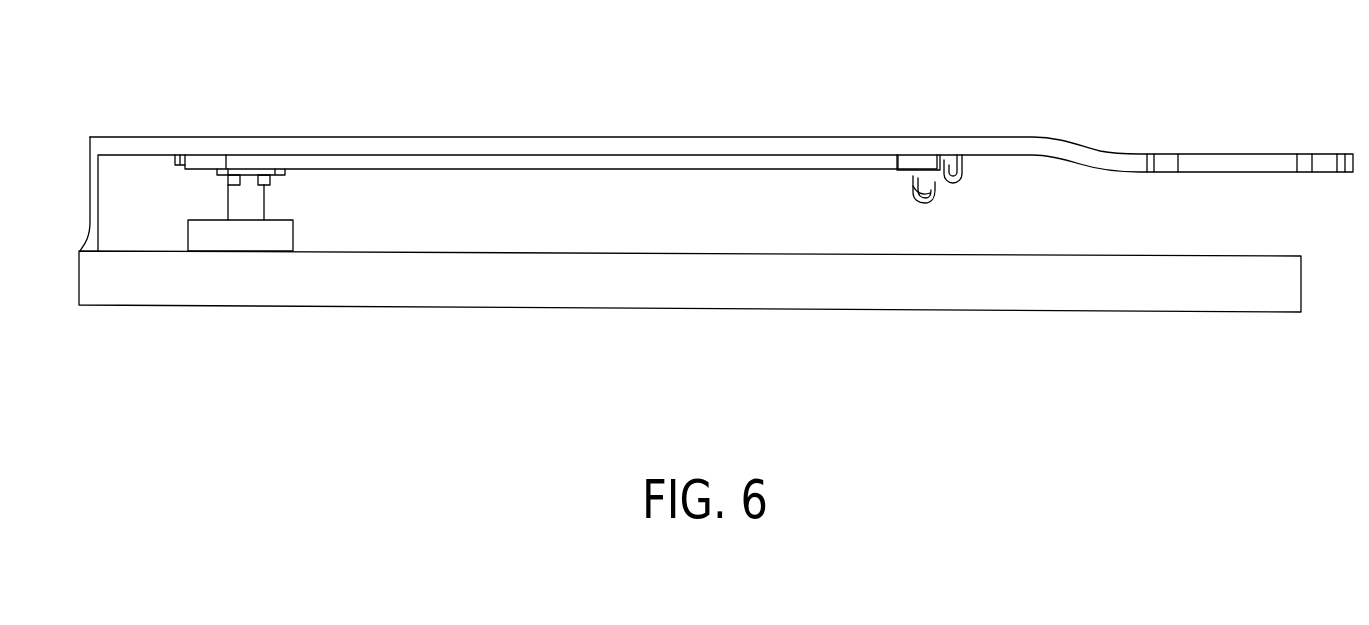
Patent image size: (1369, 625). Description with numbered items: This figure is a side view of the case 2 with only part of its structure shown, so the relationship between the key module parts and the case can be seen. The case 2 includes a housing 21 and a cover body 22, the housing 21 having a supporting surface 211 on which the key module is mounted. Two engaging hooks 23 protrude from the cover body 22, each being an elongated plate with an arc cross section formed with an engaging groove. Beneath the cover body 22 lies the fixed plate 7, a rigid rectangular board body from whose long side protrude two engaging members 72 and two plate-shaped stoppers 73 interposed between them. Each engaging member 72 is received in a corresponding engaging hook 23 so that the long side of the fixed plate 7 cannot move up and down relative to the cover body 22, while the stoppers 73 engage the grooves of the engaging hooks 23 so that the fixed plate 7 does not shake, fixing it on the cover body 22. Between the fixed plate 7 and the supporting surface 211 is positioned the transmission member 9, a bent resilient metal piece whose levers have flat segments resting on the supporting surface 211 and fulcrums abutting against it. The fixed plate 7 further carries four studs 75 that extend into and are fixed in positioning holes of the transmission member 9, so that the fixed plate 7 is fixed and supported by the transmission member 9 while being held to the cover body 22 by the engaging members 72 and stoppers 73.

The case 2 is at (1105, 106).
The cover body 22 is at (985, 145).
The fixed plate 7 is at (775, 170).
The engaging member 72 is at (922, 172).
The plate-shaped stopper 73 is at (920, 203).
The engaging hook 23 is at (955, 182).
The stud 75 is at (260, 183).
The transmission member 9 is at (258, 205).
The supporting surface 211 is at (287, 212).
The housing 21 is at (936, 290).